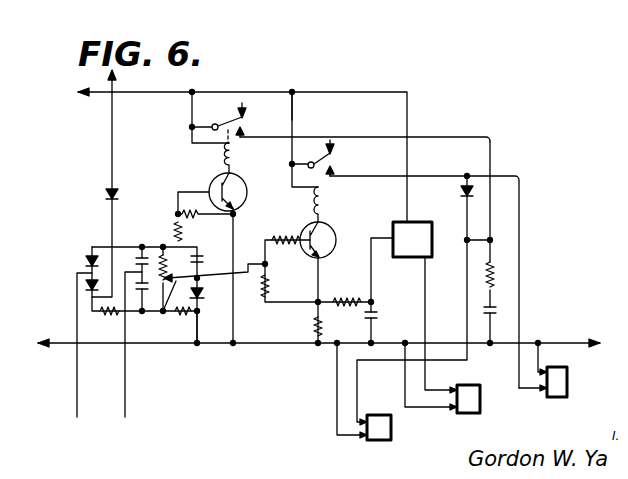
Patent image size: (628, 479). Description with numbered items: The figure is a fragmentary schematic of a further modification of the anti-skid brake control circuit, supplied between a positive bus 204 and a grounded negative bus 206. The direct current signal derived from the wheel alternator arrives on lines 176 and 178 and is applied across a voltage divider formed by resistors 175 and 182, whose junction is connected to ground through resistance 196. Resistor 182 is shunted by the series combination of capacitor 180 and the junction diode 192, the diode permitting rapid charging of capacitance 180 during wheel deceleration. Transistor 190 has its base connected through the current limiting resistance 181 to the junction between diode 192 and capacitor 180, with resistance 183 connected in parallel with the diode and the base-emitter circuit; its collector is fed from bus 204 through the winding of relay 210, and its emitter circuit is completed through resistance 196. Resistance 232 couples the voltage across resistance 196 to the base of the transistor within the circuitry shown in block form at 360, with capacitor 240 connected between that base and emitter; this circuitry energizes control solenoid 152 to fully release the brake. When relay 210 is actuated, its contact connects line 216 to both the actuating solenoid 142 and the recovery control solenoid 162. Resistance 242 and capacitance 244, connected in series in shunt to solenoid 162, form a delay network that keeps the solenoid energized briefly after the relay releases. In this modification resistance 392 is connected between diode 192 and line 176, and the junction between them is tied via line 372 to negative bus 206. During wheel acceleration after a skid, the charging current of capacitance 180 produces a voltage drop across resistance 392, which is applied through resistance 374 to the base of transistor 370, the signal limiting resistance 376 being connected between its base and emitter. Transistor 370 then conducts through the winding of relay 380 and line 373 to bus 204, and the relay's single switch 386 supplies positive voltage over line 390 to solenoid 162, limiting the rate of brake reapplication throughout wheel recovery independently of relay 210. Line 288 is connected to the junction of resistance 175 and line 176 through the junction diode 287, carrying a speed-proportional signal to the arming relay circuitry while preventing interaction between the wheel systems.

The line 288 is at (114, 92).
The line 373 is at (194, 100).
The positive bus 204 is at (262, 97).
The switch 386 is at (218, 138).
The line 390 is at (456, 131).
The relay 380 is at (247, 153).
The relay 210 is at (333, 190).
The line 216 is at (374, 176).
The block 360 is at (427, 222).
The transistor 370 is at (214, 181).
The transistor 190 is at (340, 231).
The current limiting resistance 181 is at (286, 224).
The resistance 183 is at (272, 292).
The resistance 232 is at (345, 293).
The resistance 196 is at (319, 322).
The capacitor 240 is at (378, 318).
The resistance 242 is at (494, 275).
The capacitance 244 is at (495, 311).
The actuating solenoid 142 is at (568, 382).
The control solenoid 152 is at (476, 381).
The control solenoid 162 is at (378, 411).
The negative bus 206 is at (270, 346).
The line 372 is at (199, 346).
The resistance 392 is at (183, 320).
The resistor 175 is at (104, 323).
The line 176 is at (146, 298).
The line 178 is at (164, 250).
The resistance 374 is at (184, 232).
The signal limiting resistance 376 is at (186, 213).
The capacitor 180 is at (203, 257).
The resistor 182 is at (214, 274).
The unidirectional device 192 is at (202, 295).
The junction diode 287 is at (118, 192).